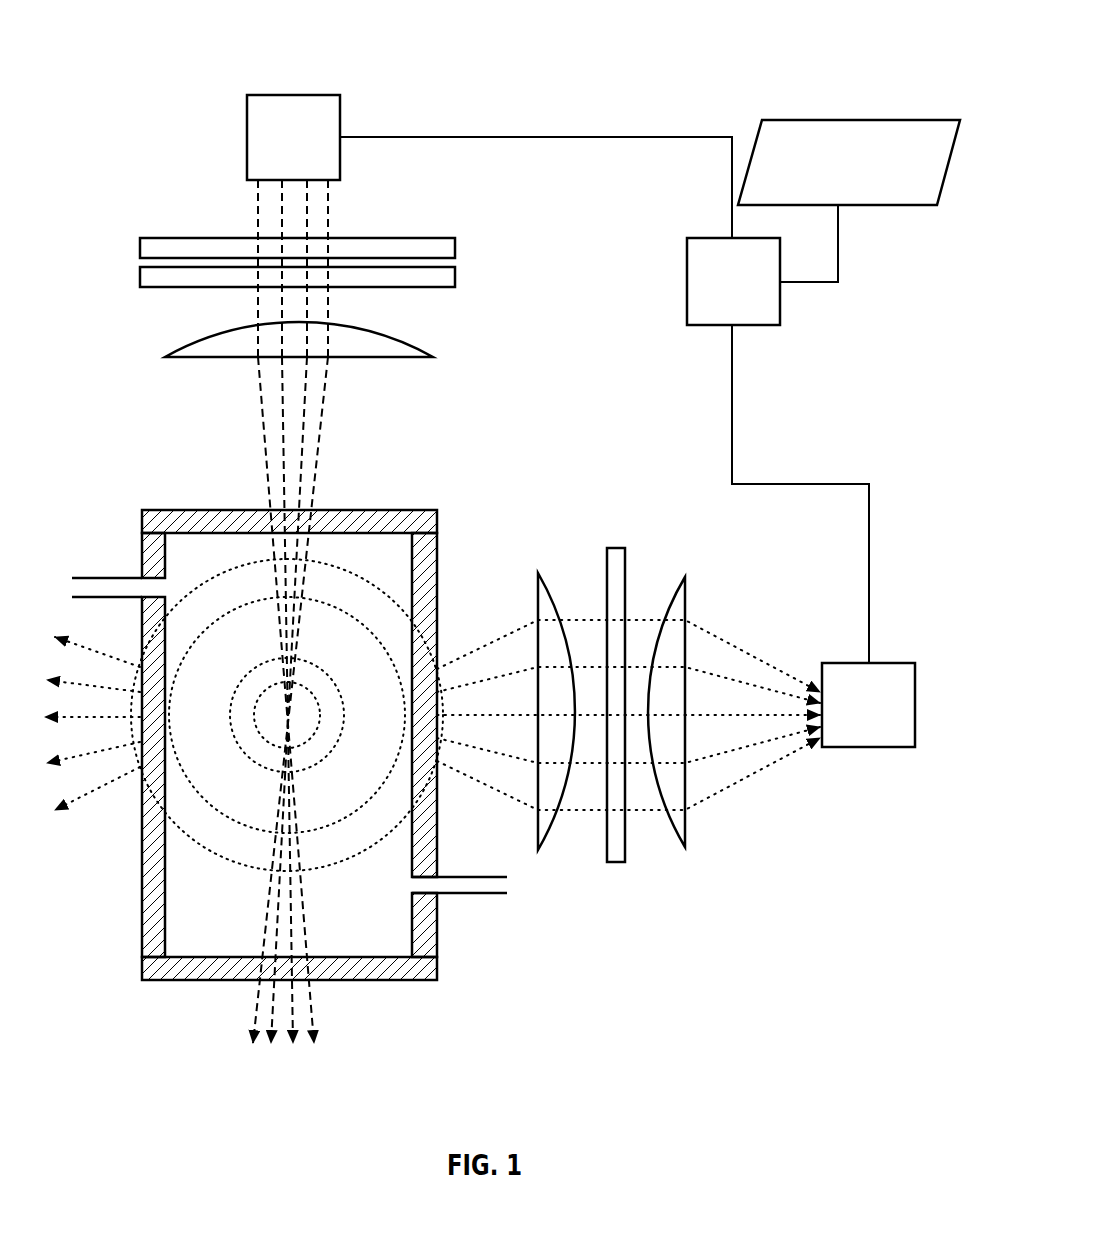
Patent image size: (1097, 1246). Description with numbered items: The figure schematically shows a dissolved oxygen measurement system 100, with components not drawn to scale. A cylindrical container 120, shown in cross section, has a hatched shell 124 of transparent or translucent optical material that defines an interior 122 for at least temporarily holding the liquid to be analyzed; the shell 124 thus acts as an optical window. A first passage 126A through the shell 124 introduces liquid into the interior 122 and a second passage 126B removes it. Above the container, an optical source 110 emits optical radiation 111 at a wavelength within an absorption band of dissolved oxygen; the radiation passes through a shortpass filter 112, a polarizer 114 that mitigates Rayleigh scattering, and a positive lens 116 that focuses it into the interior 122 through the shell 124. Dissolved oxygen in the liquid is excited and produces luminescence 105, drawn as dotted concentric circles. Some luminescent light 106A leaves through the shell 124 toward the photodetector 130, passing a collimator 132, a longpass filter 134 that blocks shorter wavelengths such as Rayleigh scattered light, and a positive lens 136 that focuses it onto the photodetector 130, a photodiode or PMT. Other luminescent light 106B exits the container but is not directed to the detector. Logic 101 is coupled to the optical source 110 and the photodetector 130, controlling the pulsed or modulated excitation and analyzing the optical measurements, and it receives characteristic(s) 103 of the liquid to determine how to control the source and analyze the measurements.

The dissolved oxygen measurement system 100 is at (757, 47).
The logic 101 is at (718, 306).
The characteristic(s) 103 is at (835, 187).
The luminescence 105 is at (372, 560).
The luminescent light 106A is at (460, 643).
The other luminescent light 106B is at (119, 802).
The optical source 110 is at (278, 175).
The optical radiation 111 is at (245, 218).
The shortpass filter 112 is at (455, 238).
The polarizer 114 is at (455, 287).
The positive lens 116 is at (165, 357).
The container 120 is at (342, 776).
The interior 122 is at (208, 903).
The shell 124 is at (437, 530).
The first passage 126A is at (90, 575).
The second passage 126B is at (485, 893).
The photodetector 130 is at (853, 741).
The collimator 132 is at (538, 850).
The longpass filter 134 is at (617, 862).
The positive lens 136 is at (685, 847).